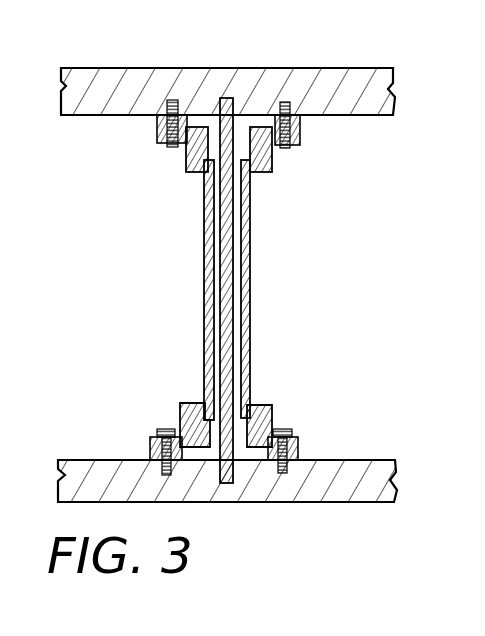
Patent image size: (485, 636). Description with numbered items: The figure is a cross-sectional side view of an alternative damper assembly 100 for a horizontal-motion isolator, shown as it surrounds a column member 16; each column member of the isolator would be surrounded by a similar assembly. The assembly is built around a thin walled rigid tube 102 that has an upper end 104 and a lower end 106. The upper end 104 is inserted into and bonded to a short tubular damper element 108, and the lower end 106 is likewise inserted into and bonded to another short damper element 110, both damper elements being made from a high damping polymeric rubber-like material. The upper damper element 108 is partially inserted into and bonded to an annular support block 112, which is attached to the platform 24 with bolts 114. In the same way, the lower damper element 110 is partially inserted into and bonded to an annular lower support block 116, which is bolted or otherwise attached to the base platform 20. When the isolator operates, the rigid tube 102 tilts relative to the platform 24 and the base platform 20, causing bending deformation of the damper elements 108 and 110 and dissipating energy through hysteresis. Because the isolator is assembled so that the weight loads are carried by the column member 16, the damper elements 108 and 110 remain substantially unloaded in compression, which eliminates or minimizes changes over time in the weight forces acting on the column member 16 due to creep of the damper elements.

The column member 16 is at (218, 285).
The base platform 20 is at (377, 460).
The platform 24 is at (314, 68).
The damper assembly 100 is at (280, 326).
The thin walled rigid tube 102 is at (251, 242).
The upper end 104 is at (252, 186).
The lower end 106 is at (256, 400).
The tubular damper element 108 is at (186, 162).
The damper element 110 is at (180, 405).
The annular support block 112 is at (301, 130).
The bolts 114 is at (156, 143).
The annular lower support block 116 is at (299, 445).